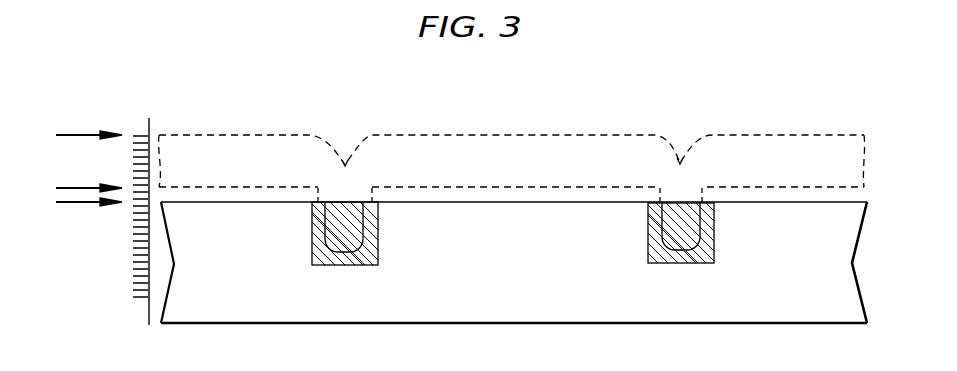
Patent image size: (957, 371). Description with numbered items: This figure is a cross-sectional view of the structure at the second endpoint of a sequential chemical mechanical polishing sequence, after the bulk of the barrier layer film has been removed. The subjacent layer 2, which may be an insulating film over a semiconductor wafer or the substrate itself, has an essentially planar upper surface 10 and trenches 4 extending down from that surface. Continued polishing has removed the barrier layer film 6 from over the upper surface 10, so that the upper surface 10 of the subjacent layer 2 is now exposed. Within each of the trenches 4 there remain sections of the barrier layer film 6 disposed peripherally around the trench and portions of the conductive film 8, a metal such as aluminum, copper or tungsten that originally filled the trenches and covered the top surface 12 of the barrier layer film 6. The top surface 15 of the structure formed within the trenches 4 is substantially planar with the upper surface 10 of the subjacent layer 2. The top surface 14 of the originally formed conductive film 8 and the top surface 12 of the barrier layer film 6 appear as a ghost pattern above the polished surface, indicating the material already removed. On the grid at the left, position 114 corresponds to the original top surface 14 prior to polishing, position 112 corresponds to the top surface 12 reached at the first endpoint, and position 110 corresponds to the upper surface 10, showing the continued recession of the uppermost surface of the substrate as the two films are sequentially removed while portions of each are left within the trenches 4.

The subjacent layer 2 is at (538, 279).
The trenches 4 is at (363, 252).
The barrier layer film 6 is at (322, 207).
The conductive film 8 is at (680, 207).
The upper surface 10 is at (438, 202).
The top surface of barrier layer film 12 is at (560, 187).
The top surface of conductive film 14 is at (575, 134).
The top surface of structure formed within trenches 15 is at (361, 202).
The position on grid 110 is at (88, 202).
The position on grid 112 is at (88, 187).
The position on grid 114 is at (88, 133).